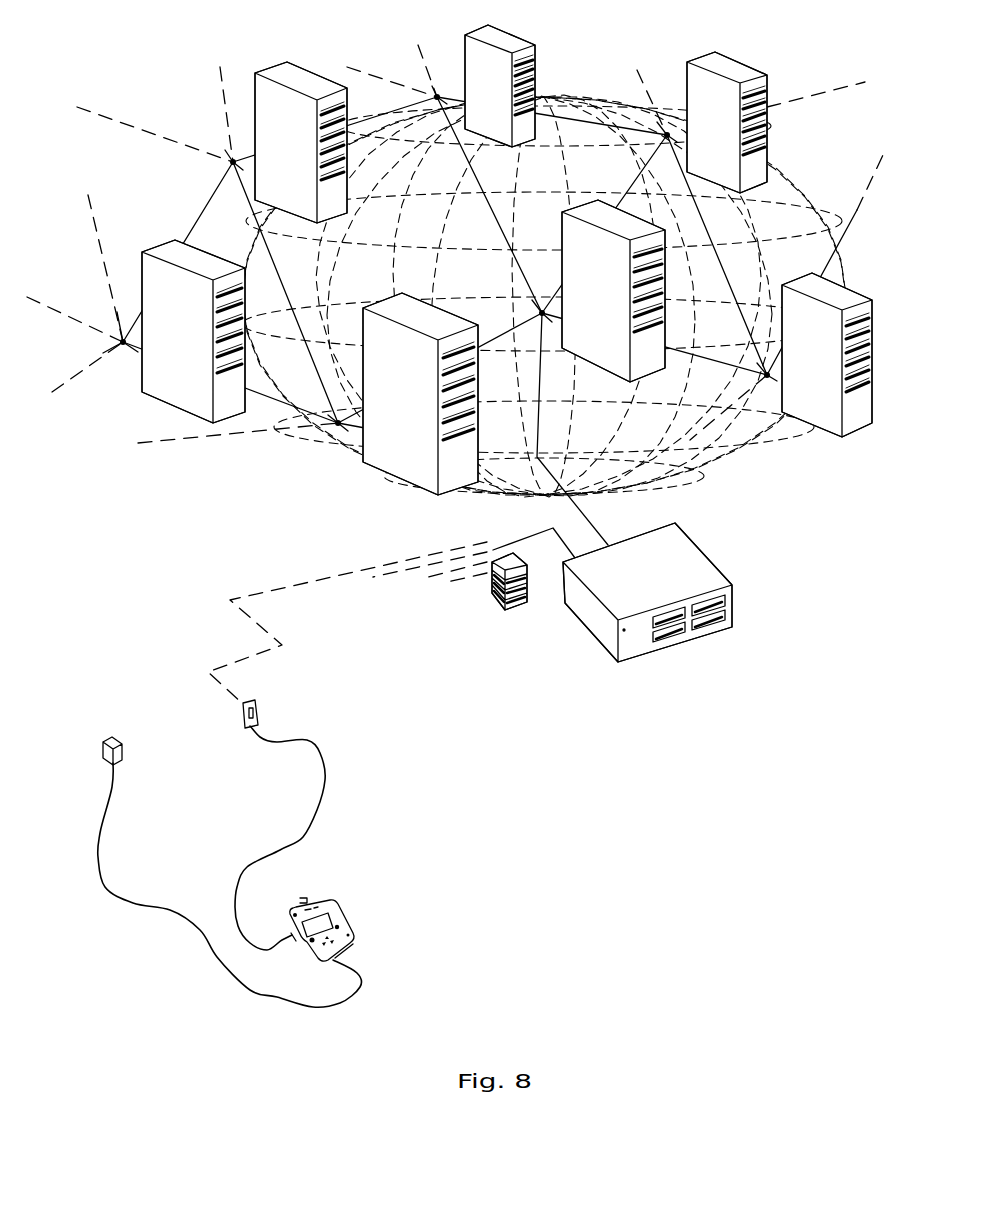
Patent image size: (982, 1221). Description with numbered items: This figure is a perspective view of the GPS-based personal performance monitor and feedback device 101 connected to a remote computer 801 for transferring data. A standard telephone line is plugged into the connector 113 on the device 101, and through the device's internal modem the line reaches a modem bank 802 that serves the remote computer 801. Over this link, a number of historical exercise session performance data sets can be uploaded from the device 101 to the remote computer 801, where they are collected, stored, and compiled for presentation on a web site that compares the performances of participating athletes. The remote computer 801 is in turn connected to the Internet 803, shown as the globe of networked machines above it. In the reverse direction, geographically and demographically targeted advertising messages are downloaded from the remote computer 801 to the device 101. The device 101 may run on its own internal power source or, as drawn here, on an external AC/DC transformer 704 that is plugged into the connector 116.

The Internet 803 is at (308, 462).
The modem bank 802 is at (490, 588).
The remote computer 801 is at (740, 632).
The external AC/DC transformer 704 is at (123, 757).
The GPS-based personal performance monitor and feedback device 101 is at (355, 940).
The connector 116 is at (333, 958).
The connector 113 is at (292, 937).